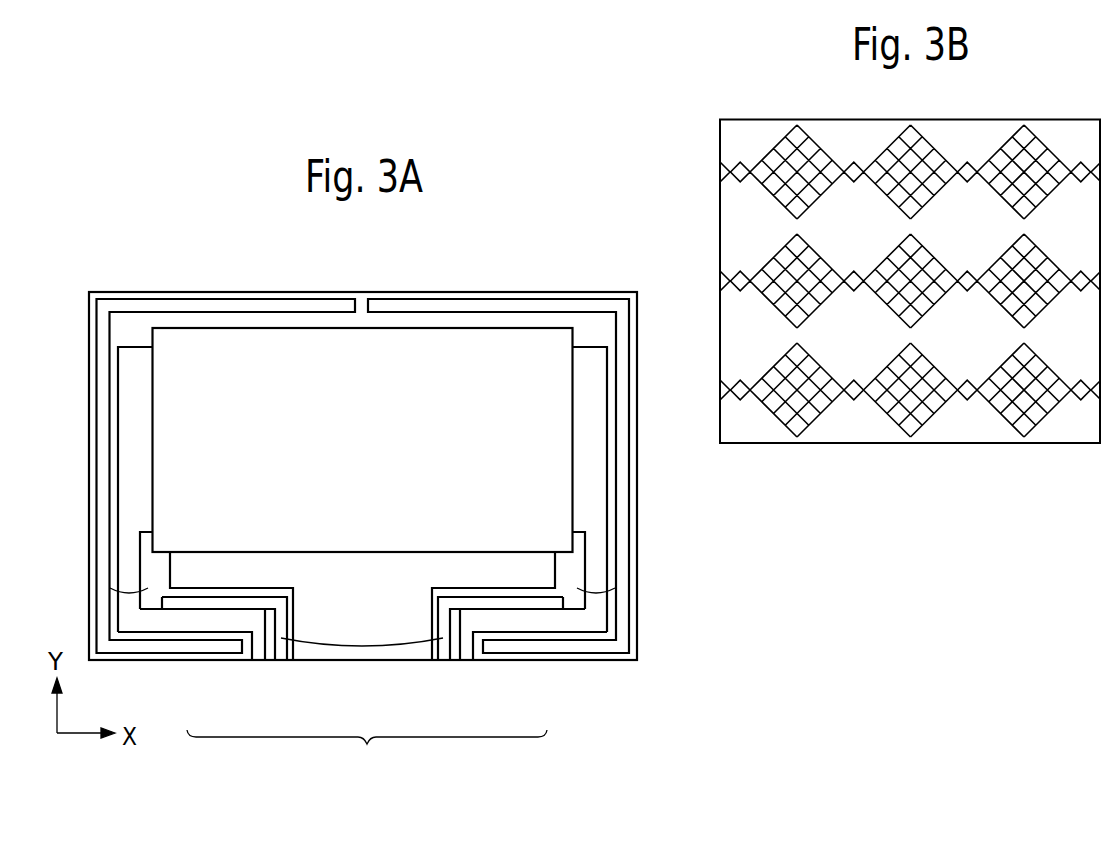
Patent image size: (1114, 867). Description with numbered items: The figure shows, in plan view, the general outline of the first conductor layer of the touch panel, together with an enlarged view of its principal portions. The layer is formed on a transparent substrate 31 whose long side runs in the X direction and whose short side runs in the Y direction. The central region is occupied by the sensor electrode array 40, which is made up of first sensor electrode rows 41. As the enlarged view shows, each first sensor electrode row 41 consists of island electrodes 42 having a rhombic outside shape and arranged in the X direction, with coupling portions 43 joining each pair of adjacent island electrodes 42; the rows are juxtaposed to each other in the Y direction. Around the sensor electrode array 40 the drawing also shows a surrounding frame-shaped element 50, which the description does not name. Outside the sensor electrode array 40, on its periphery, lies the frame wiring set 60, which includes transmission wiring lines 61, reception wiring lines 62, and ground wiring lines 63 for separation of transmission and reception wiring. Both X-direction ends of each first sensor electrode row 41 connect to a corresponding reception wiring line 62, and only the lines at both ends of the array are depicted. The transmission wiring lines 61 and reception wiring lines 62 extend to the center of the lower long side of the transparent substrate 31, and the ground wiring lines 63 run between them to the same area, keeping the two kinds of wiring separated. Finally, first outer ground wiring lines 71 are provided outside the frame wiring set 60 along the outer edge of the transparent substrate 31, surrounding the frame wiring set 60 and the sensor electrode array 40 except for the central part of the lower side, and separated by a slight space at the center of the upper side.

In FIG. 3A, the transparent substrate 31 is at (128, 292).
In FIG. 3A, the sensor electrode array 40 is at (472, 350).
In FIG. 3B, the first sensor electrode rows 41 is at (763, 263).
In FIG. 3B, the island electrodes 42 is at (918, 438).
In FIG. 3B, the coupling portions 43 is at (967, 399).
In FIG. 3A, the shield electrode 50 is at (273, 330).
In FIG. 3A, the frame wiring set 60 is at (367, 754).
In FIG. 3A, the transmission wiring lines 61 is at (367, 648).
In FIG. 3A, the reception wiring lines 62 is at (593, 598).
In FIG. 3A, the ground wiring lines for separation of transmission and reception wiring 63 is at (497, 603).
In FIG. 3A, the first outer ground wiring lines 71 is at (5, 615).